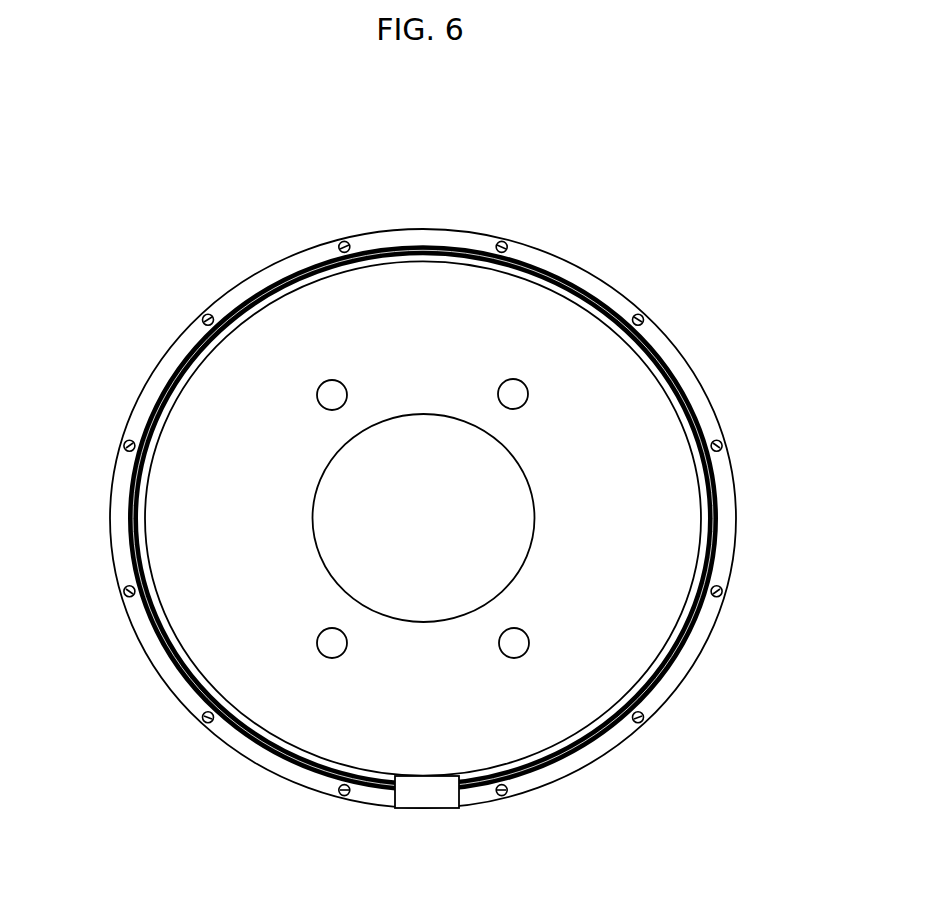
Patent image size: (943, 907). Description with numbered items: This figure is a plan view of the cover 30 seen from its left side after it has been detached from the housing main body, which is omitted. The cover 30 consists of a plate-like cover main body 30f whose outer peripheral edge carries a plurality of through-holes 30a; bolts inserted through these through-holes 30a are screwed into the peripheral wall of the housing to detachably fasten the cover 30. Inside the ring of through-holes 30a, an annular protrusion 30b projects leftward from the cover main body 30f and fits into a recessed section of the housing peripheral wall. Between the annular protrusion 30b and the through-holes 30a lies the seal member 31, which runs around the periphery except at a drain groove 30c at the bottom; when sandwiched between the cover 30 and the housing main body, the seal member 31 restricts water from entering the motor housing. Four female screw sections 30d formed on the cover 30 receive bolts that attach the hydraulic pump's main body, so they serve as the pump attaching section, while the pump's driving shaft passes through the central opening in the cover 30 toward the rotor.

The cover 30 is at (416, 229).
The through-holes 30a is at (341, 242).
The annular protrusion 30b is at (435, 261).
The drain groove 30c is at (459, 798).
The female screw section 30d is at (320, 393).
The cover main body 30f is at (213, 486).
The seal member 31 is at (664, 360).